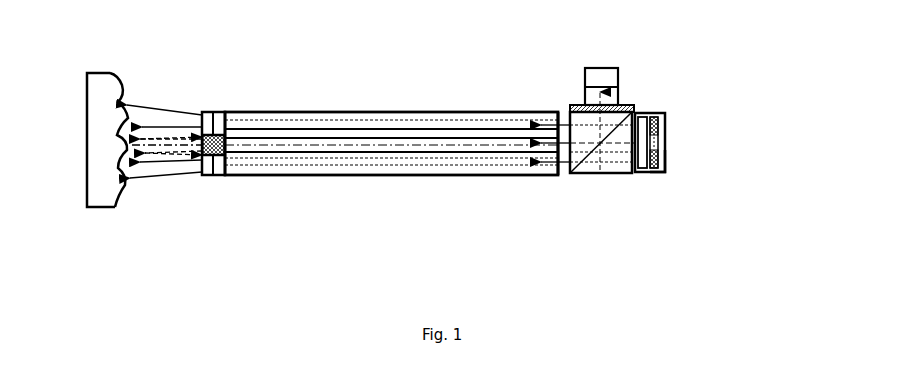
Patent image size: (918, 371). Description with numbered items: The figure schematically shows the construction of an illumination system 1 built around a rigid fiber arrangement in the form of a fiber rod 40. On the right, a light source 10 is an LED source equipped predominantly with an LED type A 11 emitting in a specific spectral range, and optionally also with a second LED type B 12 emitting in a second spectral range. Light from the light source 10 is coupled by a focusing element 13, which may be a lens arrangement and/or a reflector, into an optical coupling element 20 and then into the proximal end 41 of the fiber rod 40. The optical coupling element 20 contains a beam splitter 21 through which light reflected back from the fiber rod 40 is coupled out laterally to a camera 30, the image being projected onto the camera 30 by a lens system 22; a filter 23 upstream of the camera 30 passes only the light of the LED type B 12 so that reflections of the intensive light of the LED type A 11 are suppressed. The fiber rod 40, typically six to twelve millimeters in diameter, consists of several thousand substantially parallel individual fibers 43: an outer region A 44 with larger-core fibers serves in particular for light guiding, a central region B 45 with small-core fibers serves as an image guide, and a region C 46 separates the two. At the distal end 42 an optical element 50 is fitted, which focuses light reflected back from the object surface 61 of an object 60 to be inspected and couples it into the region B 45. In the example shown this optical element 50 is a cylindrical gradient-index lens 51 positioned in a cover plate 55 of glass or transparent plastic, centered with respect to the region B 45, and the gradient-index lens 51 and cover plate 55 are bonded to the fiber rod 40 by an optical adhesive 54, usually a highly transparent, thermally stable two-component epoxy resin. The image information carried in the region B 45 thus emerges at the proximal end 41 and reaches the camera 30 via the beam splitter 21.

The illumination system 1 is at (698, 65).
The light source 10 is at (662, 172).
The LED type A 11 is at (653, 118).
The LED type B 12 is at (668, 170).
The focusing element 13 is at (641, 168).
The optical coupling element 20 is at (580, 175).
The beam splitter 21 is at (600, 160).
The lens system 22 is at (584, 93).
The filter 23 is at (570, 105).
The camera 30 is at (600, 68).
The fiber rod 40 is at (277, 175).
The proximal end 41 is at (557, 175).
The distal end 42 is at (223, 112).
The individual fibers 43 is at (347, 145).
The region A 44 is at (372, 167).
The region B 45 is at (423, 175).
The region C 46 is at (430, 130).
The optical element 50 is at (200, 175).
The gradient-index lens 51 is at (202, 112).
The optical adhesive 54 is at (223, 175).
The cover plate 55 is at (213, 112).
The object 60 is at (102, 208).
The object surface 61 is at (120, 183).